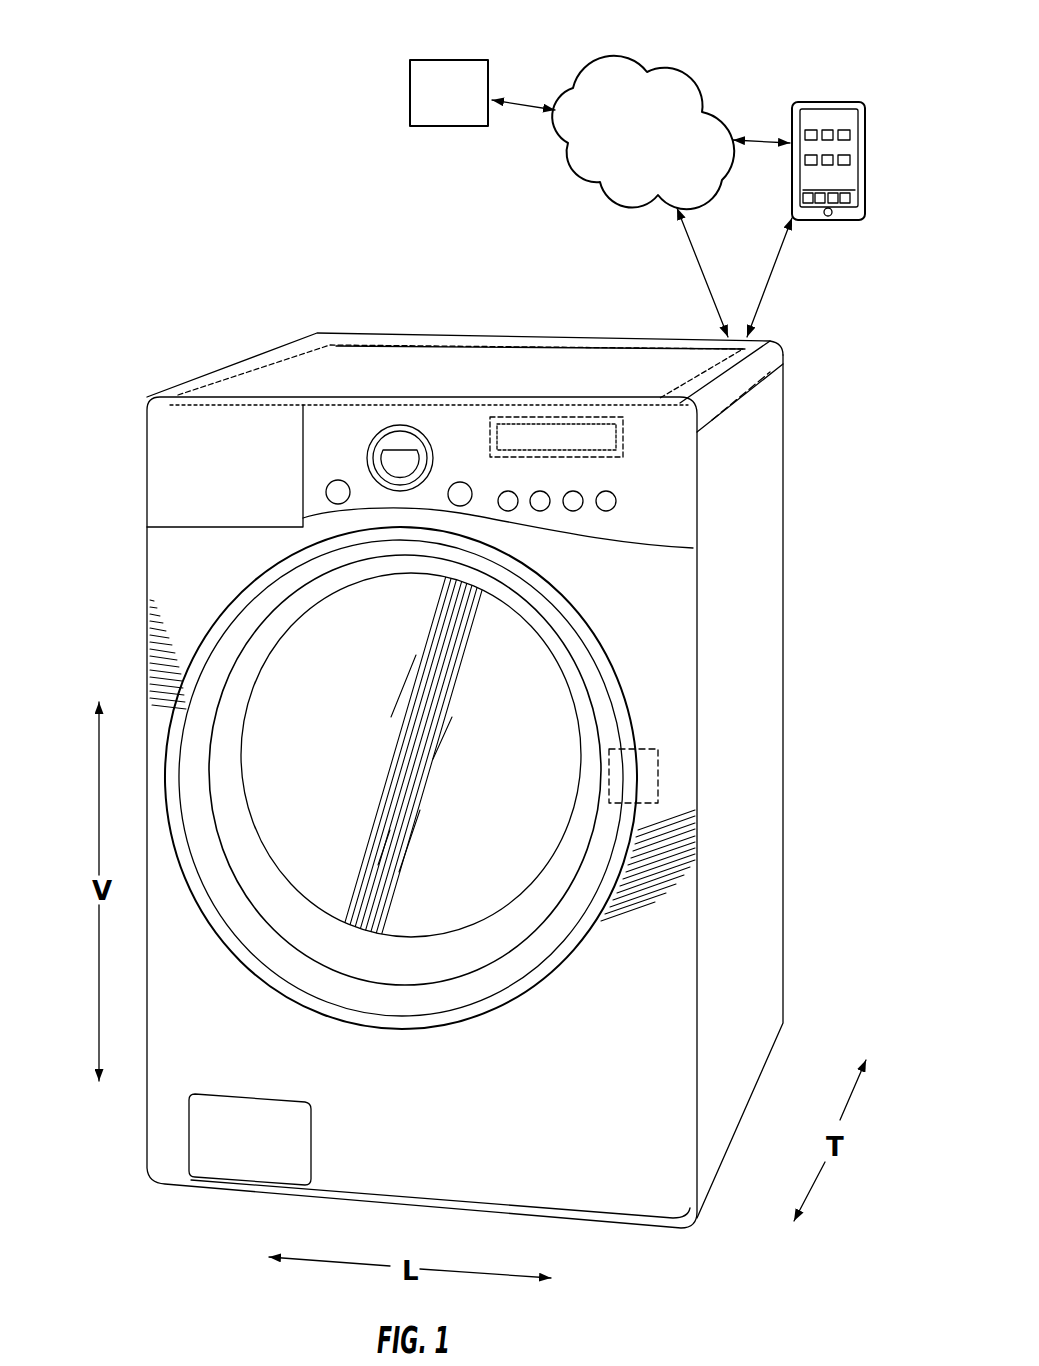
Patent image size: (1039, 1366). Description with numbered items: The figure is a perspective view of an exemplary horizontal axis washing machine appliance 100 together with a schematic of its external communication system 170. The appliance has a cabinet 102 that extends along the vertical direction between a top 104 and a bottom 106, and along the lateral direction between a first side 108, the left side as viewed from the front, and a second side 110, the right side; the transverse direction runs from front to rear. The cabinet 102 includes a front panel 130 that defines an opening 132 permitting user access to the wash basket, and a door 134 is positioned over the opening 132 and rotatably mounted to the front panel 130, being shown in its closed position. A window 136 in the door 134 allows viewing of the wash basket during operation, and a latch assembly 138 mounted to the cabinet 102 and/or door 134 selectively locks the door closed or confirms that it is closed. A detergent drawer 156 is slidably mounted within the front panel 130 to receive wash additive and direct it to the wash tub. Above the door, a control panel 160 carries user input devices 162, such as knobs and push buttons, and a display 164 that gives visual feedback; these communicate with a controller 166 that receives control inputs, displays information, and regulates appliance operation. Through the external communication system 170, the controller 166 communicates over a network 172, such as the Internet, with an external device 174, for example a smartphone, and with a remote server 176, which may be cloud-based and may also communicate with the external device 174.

The washing machine appliance 100 is at (168, 295).
The cabinet 102 is at (761, 632).
The top 104 is at (798, 345).
The bottom 106 is at (785, 1075).
The first side 108 is at (152, 1192).
The second side 110 is at (693, 1232).
The front panel 130 is at (166, 585).
The opening 132 is at (604, 637).
The door 134 is at (616, 736).
The window 136 is at (357, 718).
The latch assembly 138 is at (658, 783).
The detergent drawer 156 is at (166, 432).
The control panel 160 is at (465, 433).
The user input devices 162 is at (393, 450).
The display 164 is at (567, 435).
The controller 166 is at (545, 416).
The external communication system 170 is at (787, 60).
The network 172 is at (655, 150).
The external device 174 is at (866, 175).
The remote server 176 is at (470, 110).